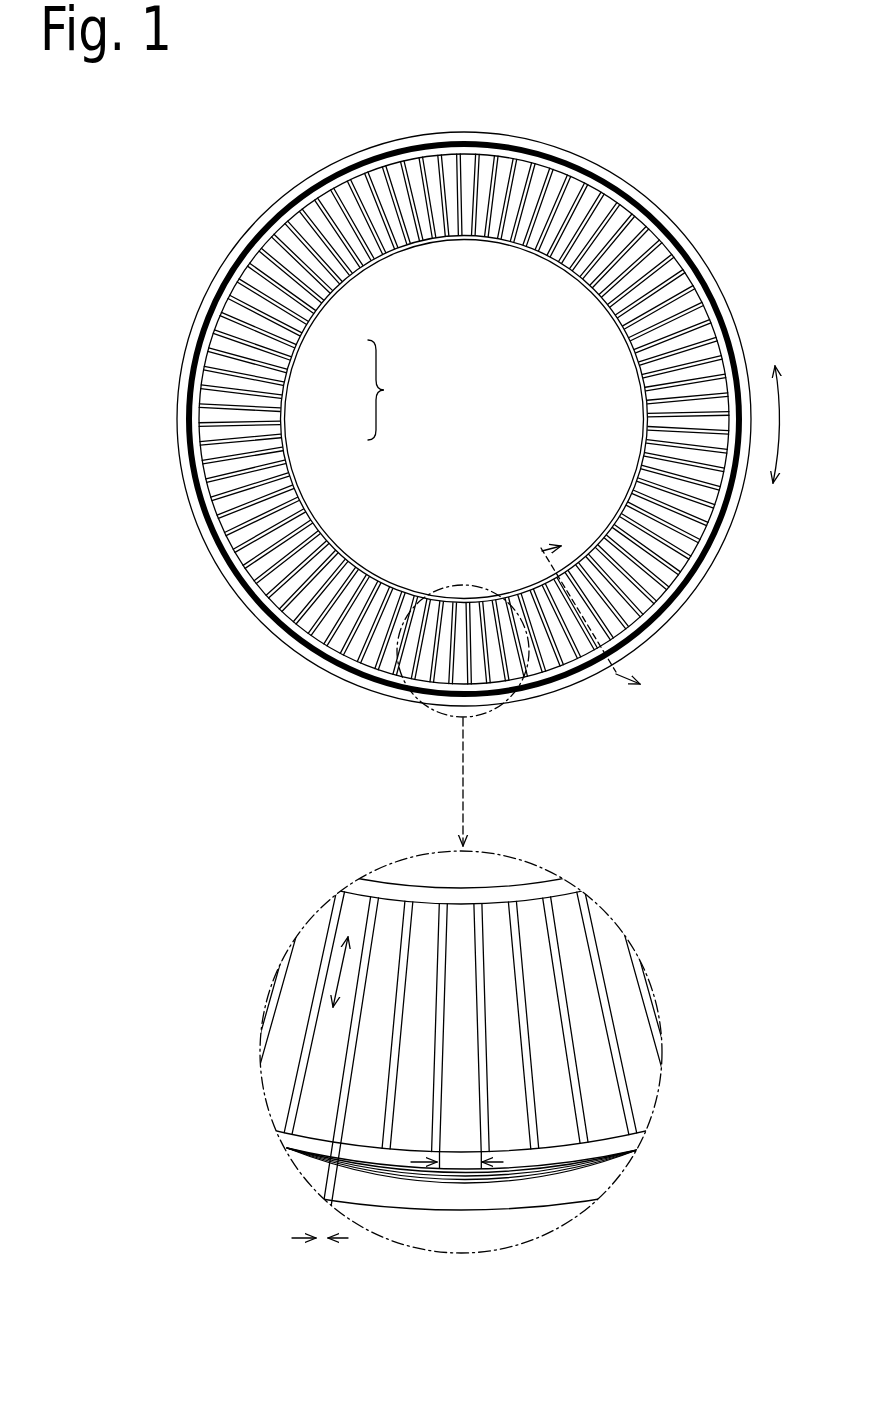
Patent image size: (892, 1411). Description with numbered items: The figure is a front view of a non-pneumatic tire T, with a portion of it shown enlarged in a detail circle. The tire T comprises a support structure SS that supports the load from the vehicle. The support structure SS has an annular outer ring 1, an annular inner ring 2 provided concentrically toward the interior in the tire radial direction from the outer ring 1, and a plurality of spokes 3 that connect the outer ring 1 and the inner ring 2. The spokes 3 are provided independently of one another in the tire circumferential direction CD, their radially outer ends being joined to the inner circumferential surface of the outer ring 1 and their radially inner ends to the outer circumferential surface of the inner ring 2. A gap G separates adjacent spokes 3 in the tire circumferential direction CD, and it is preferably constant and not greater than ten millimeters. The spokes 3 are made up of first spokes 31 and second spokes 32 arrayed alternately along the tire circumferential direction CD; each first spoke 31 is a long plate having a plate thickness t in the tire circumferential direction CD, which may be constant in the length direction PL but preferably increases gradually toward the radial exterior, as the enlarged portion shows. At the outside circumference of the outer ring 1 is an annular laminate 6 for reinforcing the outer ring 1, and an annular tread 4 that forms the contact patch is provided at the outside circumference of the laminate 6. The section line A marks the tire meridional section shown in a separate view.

The non-pneumatic tire T is at (216, 251).
The outer ring 1 is at (302, 347).
The inner ring 2 is at (305, 373).
The spokes 3 is at (287, 407).
The support structure SS is at (397, 390).
The tread 4 is at (673, 223).
The laminate 6 is at (700, 277).
The first spokes 31 is at (628, 615).
The second spokes 32 is at (648, 603).
The tire circumferential direction CD is at (807, 424).
The section A- A is at (580, 623).
The length direction PL is at (340, 970).
The gap G is at (320, 1257).
The plate thickness t is at (464, 1166).